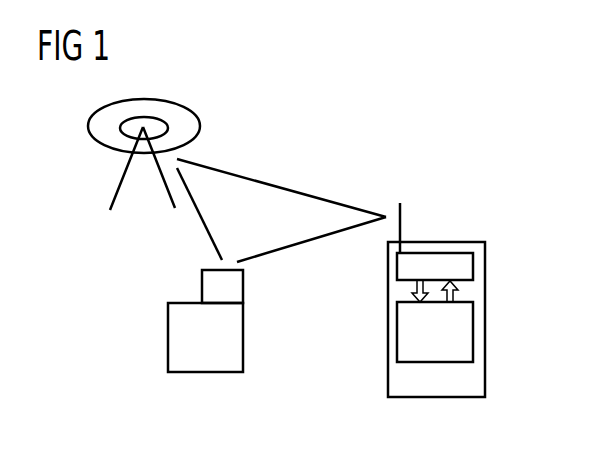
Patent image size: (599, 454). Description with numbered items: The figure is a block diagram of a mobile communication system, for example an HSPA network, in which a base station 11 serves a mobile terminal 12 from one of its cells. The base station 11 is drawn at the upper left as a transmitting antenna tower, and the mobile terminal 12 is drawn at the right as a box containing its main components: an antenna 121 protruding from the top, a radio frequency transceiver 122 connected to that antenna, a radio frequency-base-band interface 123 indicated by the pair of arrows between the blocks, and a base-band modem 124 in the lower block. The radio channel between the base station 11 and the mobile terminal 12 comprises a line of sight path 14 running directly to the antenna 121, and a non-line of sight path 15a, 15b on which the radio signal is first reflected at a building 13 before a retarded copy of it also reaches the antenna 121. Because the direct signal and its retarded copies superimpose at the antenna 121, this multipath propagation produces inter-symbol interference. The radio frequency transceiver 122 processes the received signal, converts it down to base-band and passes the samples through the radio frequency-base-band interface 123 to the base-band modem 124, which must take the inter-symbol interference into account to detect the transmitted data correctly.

The base station 11 is at (88, 123).
The line of sight path 14 is at (228, 172).
The non-line of sight path 15a is at (205, 225).
The non-line of sight path 15b is at (310, 240).
The building 13 is at (243, 337).
The mobile terminal 12 is at (485, 368).
The antenna 121 is at (402, 218).
The radio frequency transceiver 122 is at (473, 267).
The radio frequency-base-band interface 123 is at (470, 293).
The base-band modem 124 is at (473, 335).